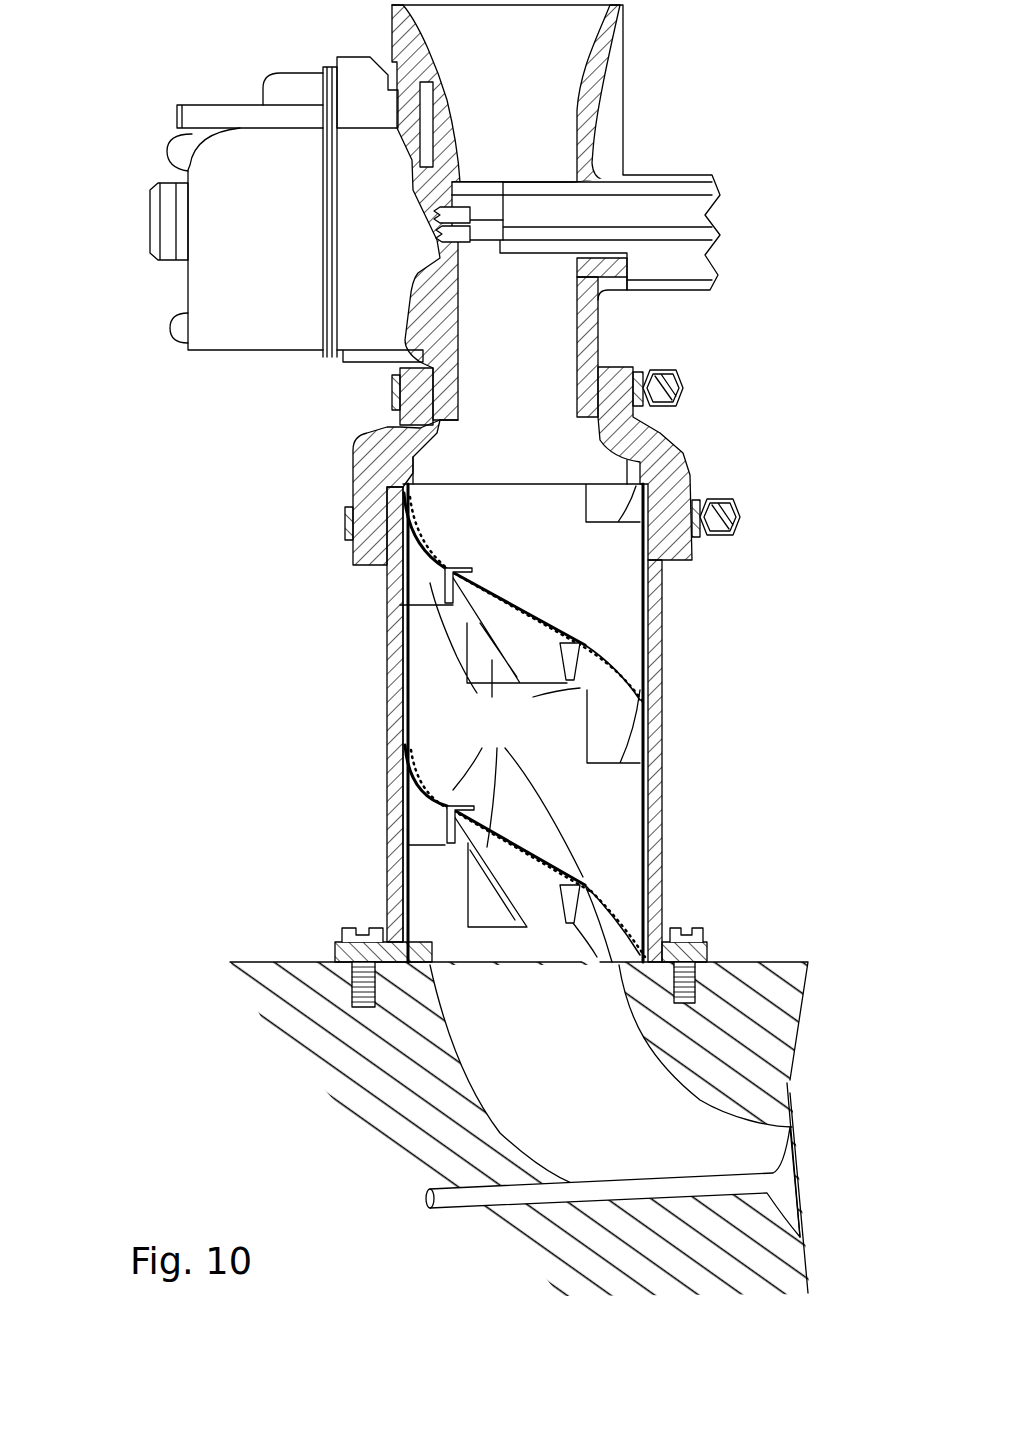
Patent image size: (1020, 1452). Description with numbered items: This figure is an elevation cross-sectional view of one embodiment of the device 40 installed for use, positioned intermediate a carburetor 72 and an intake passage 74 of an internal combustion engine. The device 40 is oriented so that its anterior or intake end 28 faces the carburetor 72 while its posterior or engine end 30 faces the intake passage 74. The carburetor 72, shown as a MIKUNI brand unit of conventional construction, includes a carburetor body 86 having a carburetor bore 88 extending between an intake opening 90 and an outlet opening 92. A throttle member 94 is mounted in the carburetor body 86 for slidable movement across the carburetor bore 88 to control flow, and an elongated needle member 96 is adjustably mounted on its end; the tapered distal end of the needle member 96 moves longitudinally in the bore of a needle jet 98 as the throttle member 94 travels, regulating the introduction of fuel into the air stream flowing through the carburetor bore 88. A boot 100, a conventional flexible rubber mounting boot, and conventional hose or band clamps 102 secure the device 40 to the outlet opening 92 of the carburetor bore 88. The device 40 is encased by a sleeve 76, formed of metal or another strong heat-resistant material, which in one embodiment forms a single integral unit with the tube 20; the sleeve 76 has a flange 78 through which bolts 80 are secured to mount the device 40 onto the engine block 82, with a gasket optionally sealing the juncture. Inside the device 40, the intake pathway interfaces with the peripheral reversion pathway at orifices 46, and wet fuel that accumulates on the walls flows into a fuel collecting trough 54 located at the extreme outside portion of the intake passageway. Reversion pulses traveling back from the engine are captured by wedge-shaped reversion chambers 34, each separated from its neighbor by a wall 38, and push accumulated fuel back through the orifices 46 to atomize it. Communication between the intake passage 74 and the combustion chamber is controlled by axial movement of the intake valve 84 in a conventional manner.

The intake opening 90 is at (523, 42).
The needle member 96 is at (478, 222).
The throttle member 94 is at (580, 215).
The needle jet 98 is at (428, 212).
The carburetor 72 is at (213, 298).
The carburetor bore 88 is at (538, 358).
The carburetor body 86 is at (590, 340).
The hose or band clamps 102 is at (670, 390).
The boot 100 is at (670, 456).
The anterior end 28 is at (352, 479).
The outlet opening 92 is at (538, 477).
The wall 38 is at (582, 653).
The sleeve 76 is at (396, 612).
The orifices 46 is at (625, 645).
The device 40 is at (224, 668).
The fuel collecting trough 54 is at (642, 697).
The reversion chamber 34 is at (491, 750).
The tube 20 is at (642, 797).
The posterior end 30 is at (392, 877).
The bolts 80 is at (360, 928).
The flange 78 is at (335, 952).
The engine block 82 is at (385, 1052).
The intake passage 74 is at (590, 1118).
The intake valve 84 is at (441, 1181).